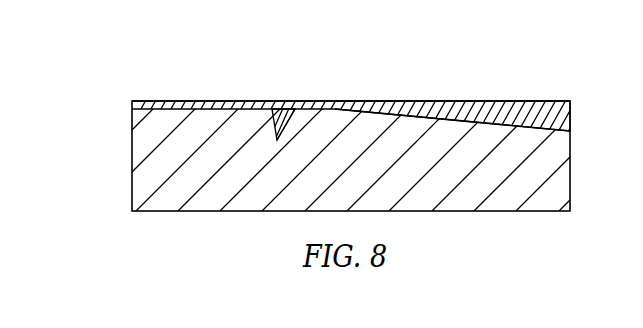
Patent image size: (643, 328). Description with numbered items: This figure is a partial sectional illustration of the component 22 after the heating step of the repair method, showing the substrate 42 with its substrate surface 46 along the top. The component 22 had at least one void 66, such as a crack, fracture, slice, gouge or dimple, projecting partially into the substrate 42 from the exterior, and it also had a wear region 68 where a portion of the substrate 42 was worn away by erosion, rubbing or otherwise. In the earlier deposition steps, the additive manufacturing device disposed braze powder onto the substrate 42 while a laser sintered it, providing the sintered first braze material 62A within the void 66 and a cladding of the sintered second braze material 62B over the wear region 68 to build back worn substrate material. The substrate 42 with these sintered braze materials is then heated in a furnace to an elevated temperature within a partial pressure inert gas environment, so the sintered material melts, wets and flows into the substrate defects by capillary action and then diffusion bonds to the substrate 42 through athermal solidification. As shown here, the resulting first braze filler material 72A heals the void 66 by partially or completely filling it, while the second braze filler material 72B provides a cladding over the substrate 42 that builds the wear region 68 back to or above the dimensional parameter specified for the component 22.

The component 22 is at (100, 83).
The substrate 42 is at (132, 170).
The substrate surface 46 is at (203, 108).
The sintered first braze material 62A is at (297, 90).
The first braze filler material 72A is at (282, 108).
The sintered second braze material 62B is at (459, 84).
The second braze filler material 72B is at (520, 116).
The void 66 is at (289, 120).
The wear region 68 is at (487, 126).